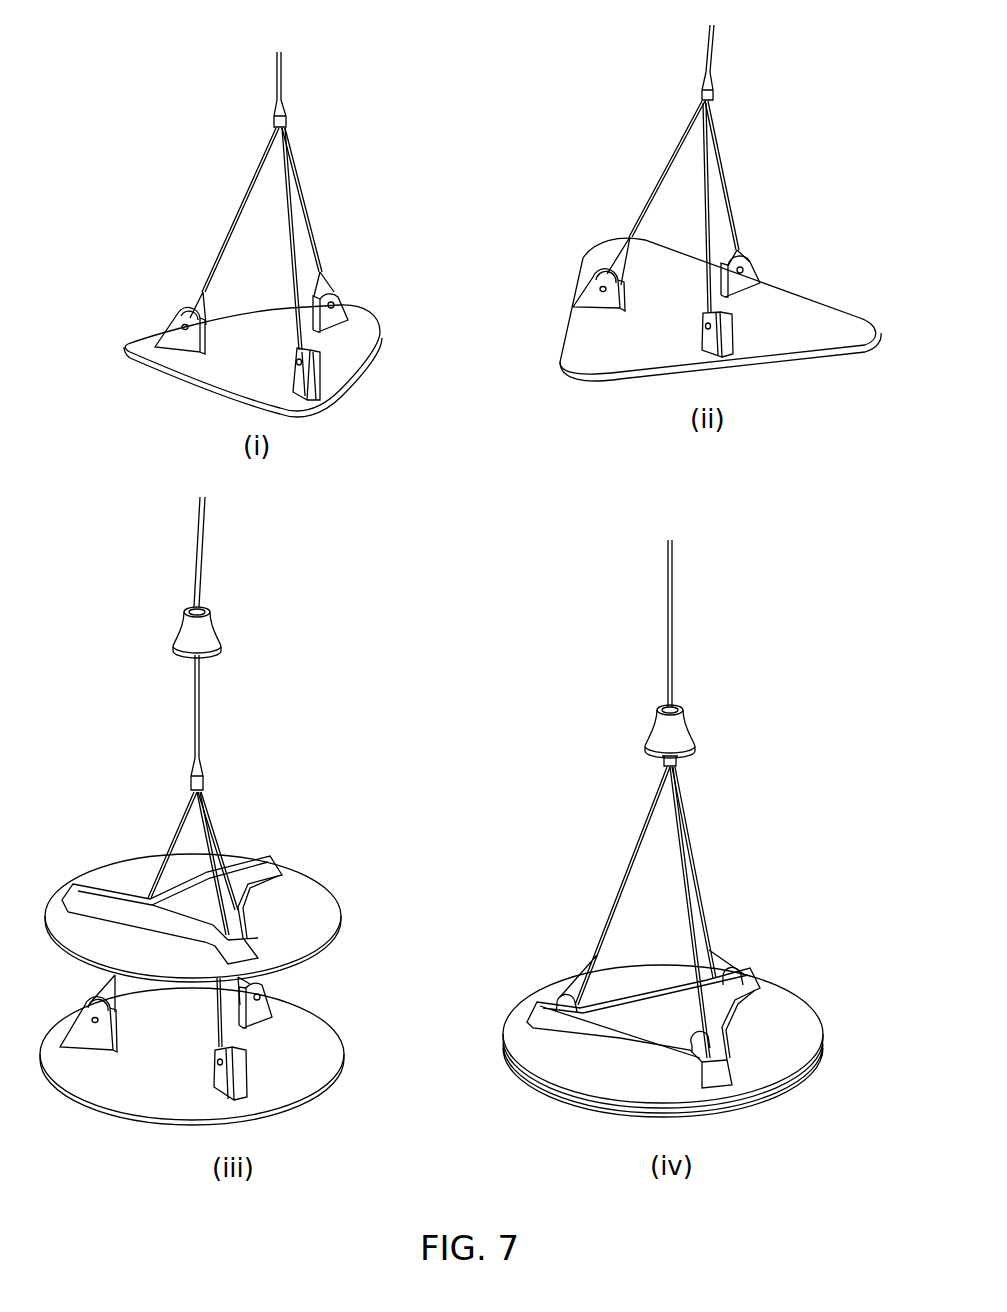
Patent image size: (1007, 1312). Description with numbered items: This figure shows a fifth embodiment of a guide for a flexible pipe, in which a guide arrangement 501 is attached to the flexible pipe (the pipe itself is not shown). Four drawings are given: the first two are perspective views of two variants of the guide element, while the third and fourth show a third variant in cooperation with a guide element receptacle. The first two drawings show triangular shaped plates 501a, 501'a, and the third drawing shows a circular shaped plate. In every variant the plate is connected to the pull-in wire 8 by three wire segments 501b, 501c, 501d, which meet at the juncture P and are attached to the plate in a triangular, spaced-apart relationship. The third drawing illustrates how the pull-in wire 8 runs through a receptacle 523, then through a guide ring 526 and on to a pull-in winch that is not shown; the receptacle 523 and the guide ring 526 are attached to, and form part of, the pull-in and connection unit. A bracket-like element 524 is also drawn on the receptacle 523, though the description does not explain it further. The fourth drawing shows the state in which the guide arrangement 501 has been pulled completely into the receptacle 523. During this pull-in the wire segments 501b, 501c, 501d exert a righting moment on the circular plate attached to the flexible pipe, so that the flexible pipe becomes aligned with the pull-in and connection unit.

The pull-in wire 8 is at (283, 69).
The juncture P is at (287, 118).
The guide arrangement 501 is at (467, 588).
The triangular shaped plate 501a is at (276, 370).
The triangular shaped plate 501'a is at (720, 309).
The wire segment 501b is at (311, 236).
The wire segment 501c is at (240, 205).
The wire segment 501d is at (296, 252).
The receptacle 523 is at (805, 1050).
The bracket 524 is at (256, 851).
The guide ring 526 is at (218, 633).